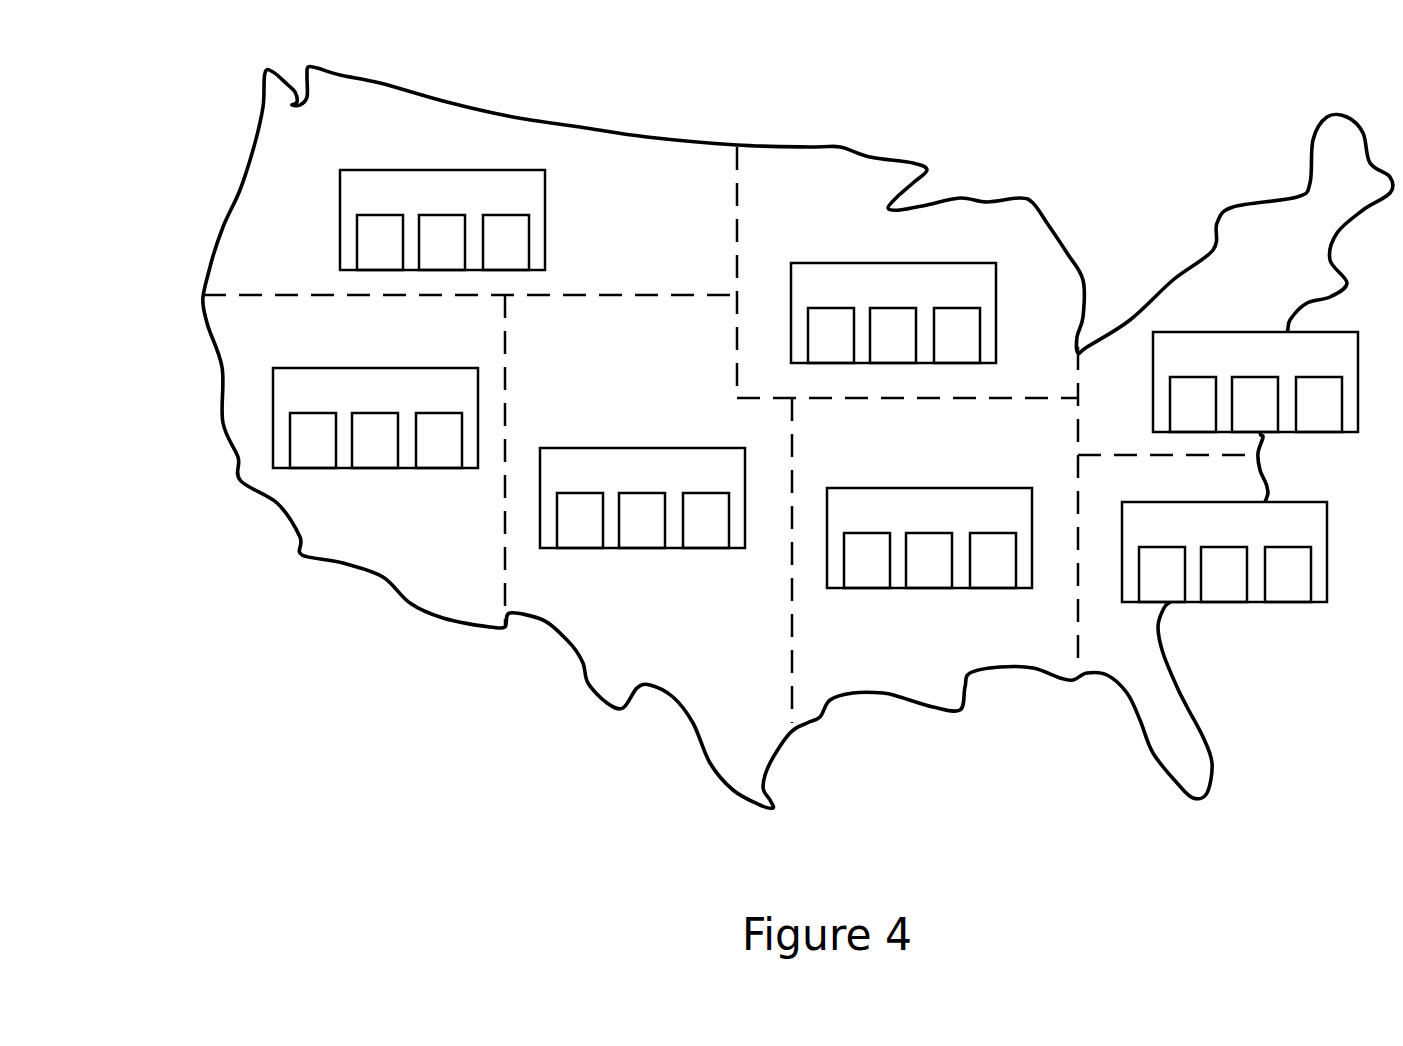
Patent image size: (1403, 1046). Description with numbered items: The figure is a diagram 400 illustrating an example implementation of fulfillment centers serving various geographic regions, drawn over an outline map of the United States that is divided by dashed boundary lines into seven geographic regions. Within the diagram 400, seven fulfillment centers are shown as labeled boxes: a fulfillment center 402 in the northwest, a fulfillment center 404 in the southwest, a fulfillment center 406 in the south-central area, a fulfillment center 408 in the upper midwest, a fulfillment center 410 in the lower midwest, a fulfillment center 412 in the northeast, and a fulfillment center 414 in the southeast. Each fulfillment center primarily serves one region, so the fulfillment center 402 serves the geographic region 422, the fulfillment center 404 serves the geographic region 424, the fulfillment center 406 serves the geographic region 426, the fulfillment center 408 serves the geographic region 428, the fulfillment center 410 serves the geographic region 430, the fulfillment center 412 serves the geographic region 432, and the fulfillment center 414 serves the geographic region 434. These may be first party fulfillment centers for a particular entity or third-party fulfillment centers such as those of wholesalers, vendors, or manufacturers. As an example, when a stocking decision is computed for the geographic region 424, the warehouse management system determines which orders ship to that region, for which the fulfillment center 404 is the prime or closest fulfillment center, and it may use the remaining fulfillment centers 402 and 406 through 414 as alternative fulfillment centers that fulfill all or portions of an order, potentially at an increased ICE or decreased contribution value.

The diagram 400 is at (163, 95).
The fulfillment center 402 is at (488, 208).
The fulfillment center 404 is at (421, 406).
The fulfillment center 406 is at (688, 486).
The fulfillment center 408 is at (939, 302).
The fulfillment center 410 is at (975, 526).
The fulfillment center 412 is at (1301, 370).
The fulfillment center 414 is at (1270, 540).
The geographic region 422 is at (661, 270).
The geographic region 424 is at (465, 572).
The geographic region 426 is at (760, 714).
The geographic region 428 is at (1056, 394).
The geographic region 430 is at (1046, 644).
The geographic region 432 is at (1305, 288).
The geographic region 434 is at (1145, 660).